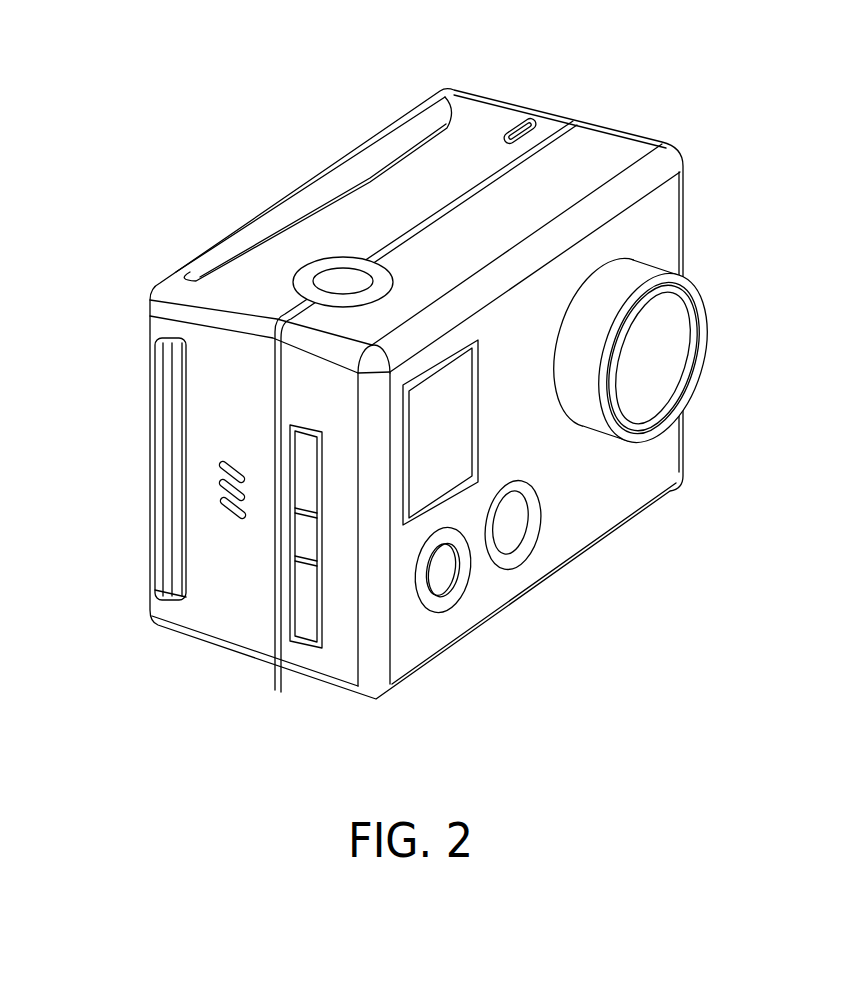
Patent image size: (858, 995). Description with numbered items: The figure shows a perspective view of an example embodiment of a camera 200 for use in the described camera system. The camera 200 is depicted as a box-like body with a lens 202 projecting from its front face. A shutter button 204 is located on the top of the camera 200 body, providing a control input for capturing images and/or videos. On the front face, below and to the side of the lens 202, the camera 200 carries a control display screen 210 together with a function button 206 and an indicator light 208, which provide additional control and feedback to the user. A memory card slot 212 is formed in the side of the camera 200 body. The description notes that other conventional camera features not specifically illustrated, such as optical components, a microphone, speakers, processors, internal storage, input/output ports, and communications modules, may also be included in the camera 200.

The camera 200 is at (597, 153).
The lens 202 is at (668, 363).
The shutter button 204 is at (341, 278).
The function button 206 is at (440, 583).
The indicator light 208 is at (507, 530).
The control display screen 210 is at (418, 455).
The memory card slot 212 is at (310, 623).